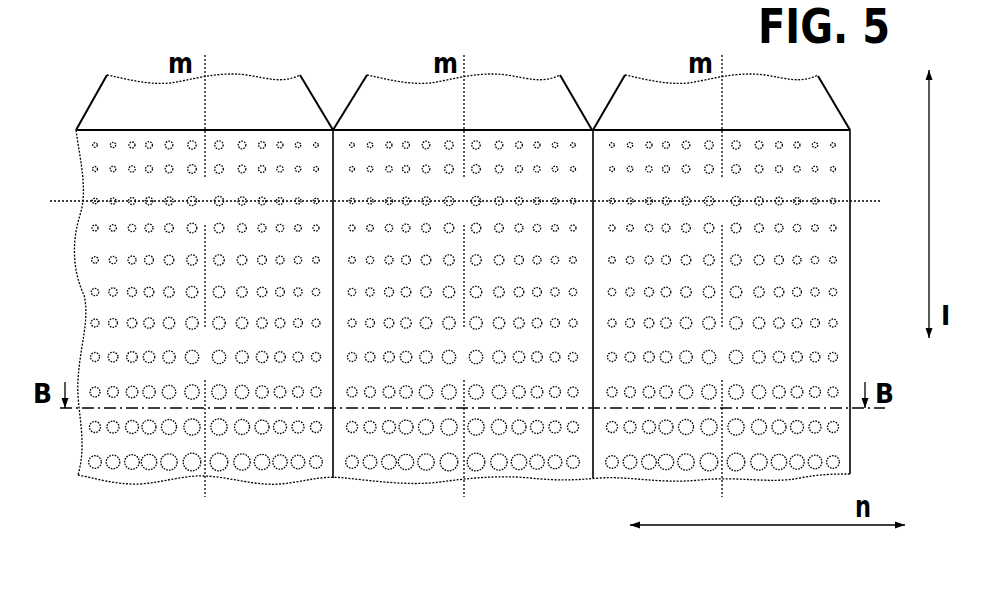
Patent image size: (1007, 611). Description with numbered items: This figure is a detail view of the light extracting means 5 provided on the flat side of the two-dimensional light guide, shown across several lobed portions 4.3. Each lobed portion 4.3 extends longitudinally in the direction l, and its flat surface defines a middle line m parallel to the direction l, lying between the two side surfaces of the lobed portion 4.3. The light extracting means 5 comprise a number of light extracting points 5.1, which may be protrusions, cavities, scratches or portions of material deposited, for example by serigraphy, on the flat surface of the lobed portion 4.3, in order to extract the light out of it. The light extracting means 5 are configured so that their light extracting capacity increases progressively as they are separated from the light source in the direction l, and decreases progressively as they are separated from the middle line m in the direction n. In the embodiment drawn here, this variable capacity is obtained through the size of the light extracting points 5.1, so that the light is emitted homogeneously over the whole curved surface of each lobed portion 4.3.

The light extracting means 5 is at (472, 309).
The light extracting points 5.1 is at (815, 357).
The lobed portion 4.3 is at (357, 480).